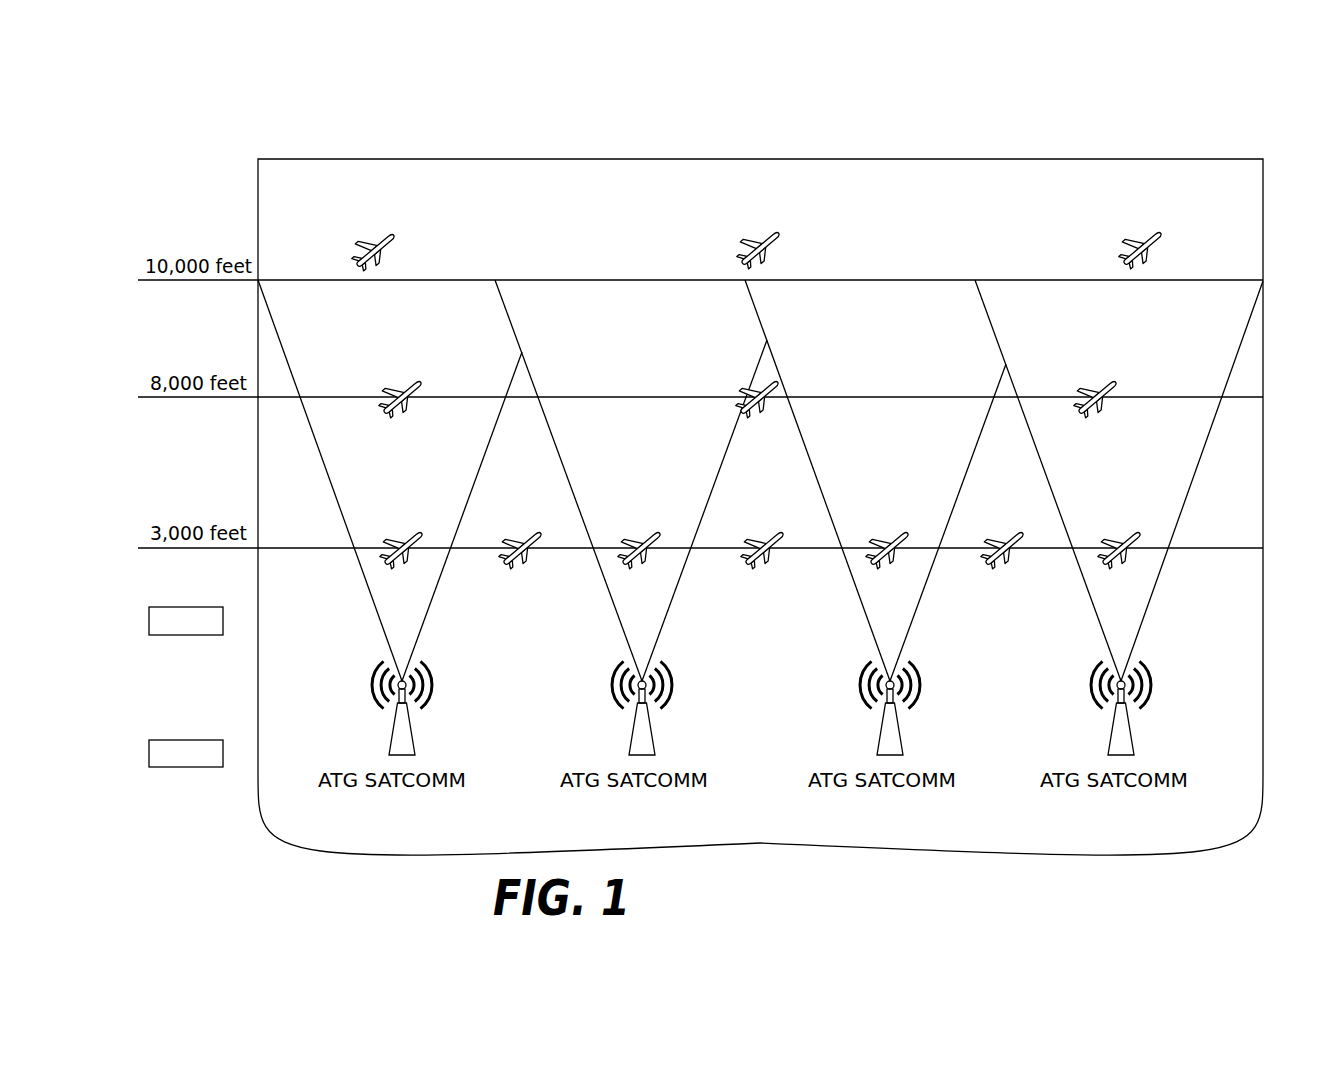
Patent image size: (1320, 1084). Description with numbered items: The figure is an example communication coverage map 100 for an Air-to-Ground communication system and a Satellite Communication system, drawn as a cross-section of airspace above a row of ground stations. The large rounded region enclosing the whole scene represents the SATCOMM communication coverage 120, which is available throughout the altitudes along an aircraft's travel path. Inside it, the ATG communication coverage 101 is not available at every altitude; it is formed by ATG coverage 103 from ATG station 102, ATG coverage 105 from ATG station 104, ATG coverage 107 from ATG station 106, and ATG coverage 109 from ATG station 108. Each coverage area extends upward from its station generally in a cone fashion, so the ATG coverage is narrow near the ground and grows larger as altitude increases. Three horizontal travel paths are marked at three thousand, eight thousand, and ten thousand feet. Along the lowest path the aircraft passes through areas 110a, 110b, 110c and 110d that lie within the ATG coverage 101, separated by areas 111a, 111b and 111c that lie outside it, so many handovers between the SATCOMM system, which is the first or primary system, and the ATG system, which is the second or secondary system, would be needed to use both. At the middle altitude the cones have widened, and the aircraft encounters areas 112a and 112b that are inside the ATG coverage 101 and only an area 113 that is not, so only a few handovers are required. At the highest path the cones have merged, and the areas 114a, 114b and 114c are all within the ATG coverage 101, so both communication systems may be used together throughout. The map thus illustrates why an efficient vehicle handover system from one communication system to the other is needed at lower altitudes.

The communication coverage map 100 is at (211, 156).
The ATG communication coverage 101 is at (186, 635).
The ATG station 102 is at (413, 728).
The ATG coverage 103 is at (425, 622).
The ATG station 104 is at (653, 728).
The ATG coverage 105 is at (665, 622).
The ATG station 106 is at (901, 728).
The ATG coverage 107 is at (913, 622).
The ATG station 108 is at (1132, 728).
The ATG coverage 109 is at (1144, 622).
The area along the path in ATG coverage 110a is at (420, 527).
The area along the path in ATG coverage 110b is at (660, 527).
The area along the path in ATG coverage 110c is at (900, 527).
The area along the path in ATG coverage 110d is at (1138, 527).
The area along the path not in ATG coverage 111a is at (540, 527).
The area along the path not in ATG coverage 111b is at (780, 527).
The area along the path not in ATG coverage 111c is at (1020, 527).
The area along the path in ATG coverage 112a is at (422, 380).
The area along the path in ATG coverage 112b is at (1117, 380).
The area along the path not in ATG coverage 113 is at (783, 382).
The area along the path in ATG coverage 114a is at (398, 237).
The area along the path in ATG coverage 114b is at (785, 237).
The area along the path in ATG coverage 114c is at (1167, 236).
The SATCOMM communication coverage 120 is at (186, 767).